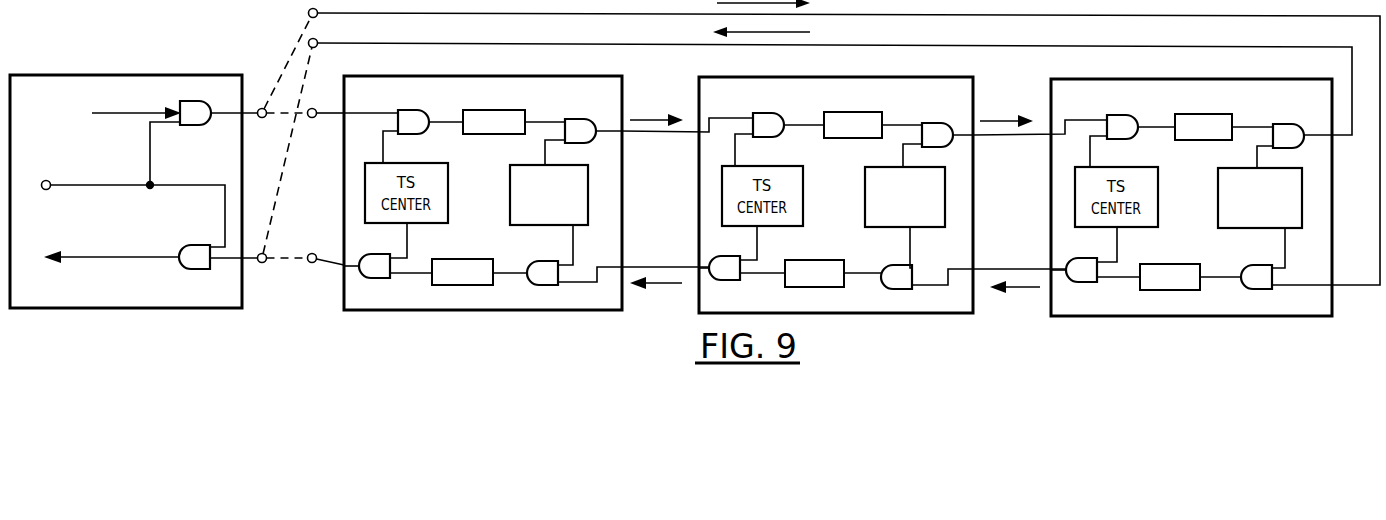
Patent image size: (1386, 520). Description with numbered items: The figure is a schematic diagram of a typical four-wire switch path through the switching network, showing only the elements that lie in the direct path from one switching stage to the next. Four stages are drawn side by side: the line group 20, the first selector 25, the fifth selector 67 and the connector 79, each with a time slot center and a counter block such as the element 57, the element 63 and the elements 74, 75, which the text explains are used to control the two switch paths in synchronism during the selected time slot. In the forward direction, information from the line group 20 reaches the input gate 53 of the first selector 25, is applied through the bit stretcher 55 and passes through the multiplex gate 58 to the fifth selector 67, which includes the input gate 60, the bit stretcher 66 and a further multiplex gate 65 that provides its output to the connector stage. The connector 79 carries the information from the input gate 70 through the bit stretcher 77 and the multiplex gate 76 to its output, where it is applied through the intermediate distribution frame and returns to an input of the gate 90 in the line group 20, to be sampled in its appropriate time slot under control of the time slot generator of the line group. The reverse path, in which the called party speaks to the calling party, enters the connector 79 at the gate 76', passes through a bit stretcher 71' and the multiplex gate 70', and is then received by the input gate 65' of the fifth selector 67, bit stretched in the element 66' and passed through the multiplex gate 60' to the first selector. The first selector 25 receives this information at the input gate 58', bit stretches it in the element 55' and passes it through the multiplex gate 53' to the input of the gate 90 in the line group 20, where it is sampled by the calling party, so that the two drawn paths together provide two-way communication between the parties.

The line group 20 is at (115, 75).
The multiplex gate 58 is at (422, 135).
The gate 90 is at (198, 245).
The first selector 25 is at (623, 159).
The input gate 53 is at (403, 136).
The bit stretcher 55 is at (494, 134).
The counter C1 57 is at (510, 184).
The multiplex gate 53' is at (388, 250).
The bit stretcher 55' is at (479, 256).
The input gate 58' is at (612, 255).
The fifth selector 67 is at (698, 176).
The input gate 60 is at (766, 129).
The bit stretcher 66 is at (867, 142).
The AND gate 65 is at (1005, 129).
The counter C1 63 is at (865, 178).
The multiplex gate 60' is at (742, 253).
The delay element (return path) 66' is at (832, 262).
The input gate 65' is at (963, 258).
The connector 79 is at (1050, 188).
The input gate 70 is at (1118, 129).
The bit stretcher 77 is at (1210, 140).
The multiplex gate 76 is at (1280, 129).
The counter C2 74 is at (1235, 198).
The counter C2 75 is at (1218, 180).
The multiplex gate 70' is at (1095, 254).
The delay element (return path) 71' is at (1191, 264).
The gate 76' is at (1249, 258).